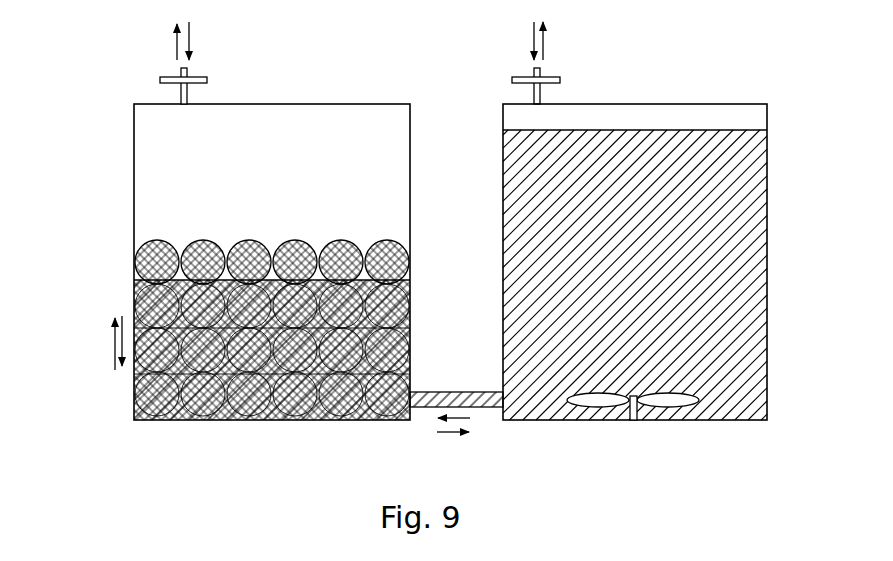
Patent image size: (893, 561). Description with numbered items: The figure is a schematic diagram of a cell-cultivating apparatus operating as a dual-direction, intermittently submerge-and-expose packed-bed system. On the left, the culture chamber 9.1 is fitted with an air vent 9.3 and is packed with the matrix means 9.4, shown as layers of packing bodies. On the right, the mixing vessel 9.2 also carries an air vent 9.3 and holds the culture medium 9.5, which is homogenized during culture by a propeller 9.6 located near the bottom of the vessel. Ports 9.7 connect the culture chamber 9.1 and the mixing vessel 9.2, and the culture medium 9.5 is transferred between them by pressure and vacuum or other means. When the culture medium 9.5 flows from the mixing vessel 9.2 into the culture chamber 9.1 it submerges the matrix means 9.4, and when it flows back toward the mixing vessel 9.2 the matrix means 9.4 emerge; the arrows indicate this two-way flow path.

The culture chamber 9.1 is at (131, 128).
The mixing vessel 9.2 is at (722, 103).
The air vent 9.3 is at (209, 76).
The matrix means 9.4 is at (156, 264).
The culture medium 9.5 is at (740, 223).
The propeller 9.6 is at (677, 408).
The ports 9.7 is at (453, 389).